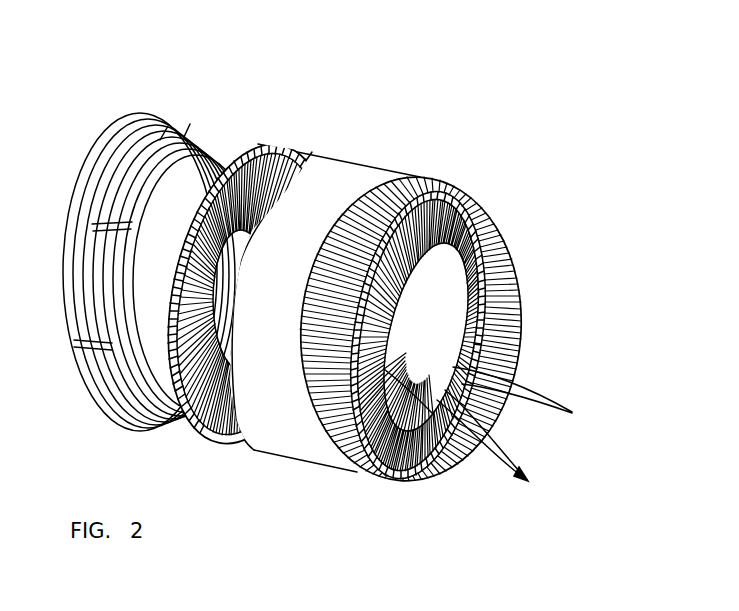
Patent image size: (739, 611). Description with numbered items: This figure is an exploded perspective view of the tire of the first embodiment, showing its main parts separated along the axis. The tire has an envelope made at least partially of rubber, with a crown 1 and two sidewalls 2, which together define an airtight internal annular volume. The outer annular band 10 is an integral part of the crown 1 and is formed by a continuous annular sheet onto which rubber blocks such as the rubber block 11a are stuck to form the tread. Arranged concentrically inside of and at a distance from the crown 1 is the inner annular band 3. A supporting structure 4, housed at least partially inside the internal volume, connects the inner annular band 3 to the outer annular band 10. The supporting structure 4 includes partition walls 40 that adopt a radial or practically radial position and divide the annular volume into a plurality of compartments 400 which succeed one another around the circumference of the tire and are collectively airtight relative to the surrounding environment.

The crown 1 is at (209, 100).
The rubber block 11a is at (126, 139).
The outer annular band 10 is at (286, 433).
The sidewalls 2 is at (311, 148).
The inner annular band 3 is at (399, 375).
The supporting structure 4 is at (523, 431).
The partition walls 40 is at (497, 441).
The compartments 400 is at (523, 406).